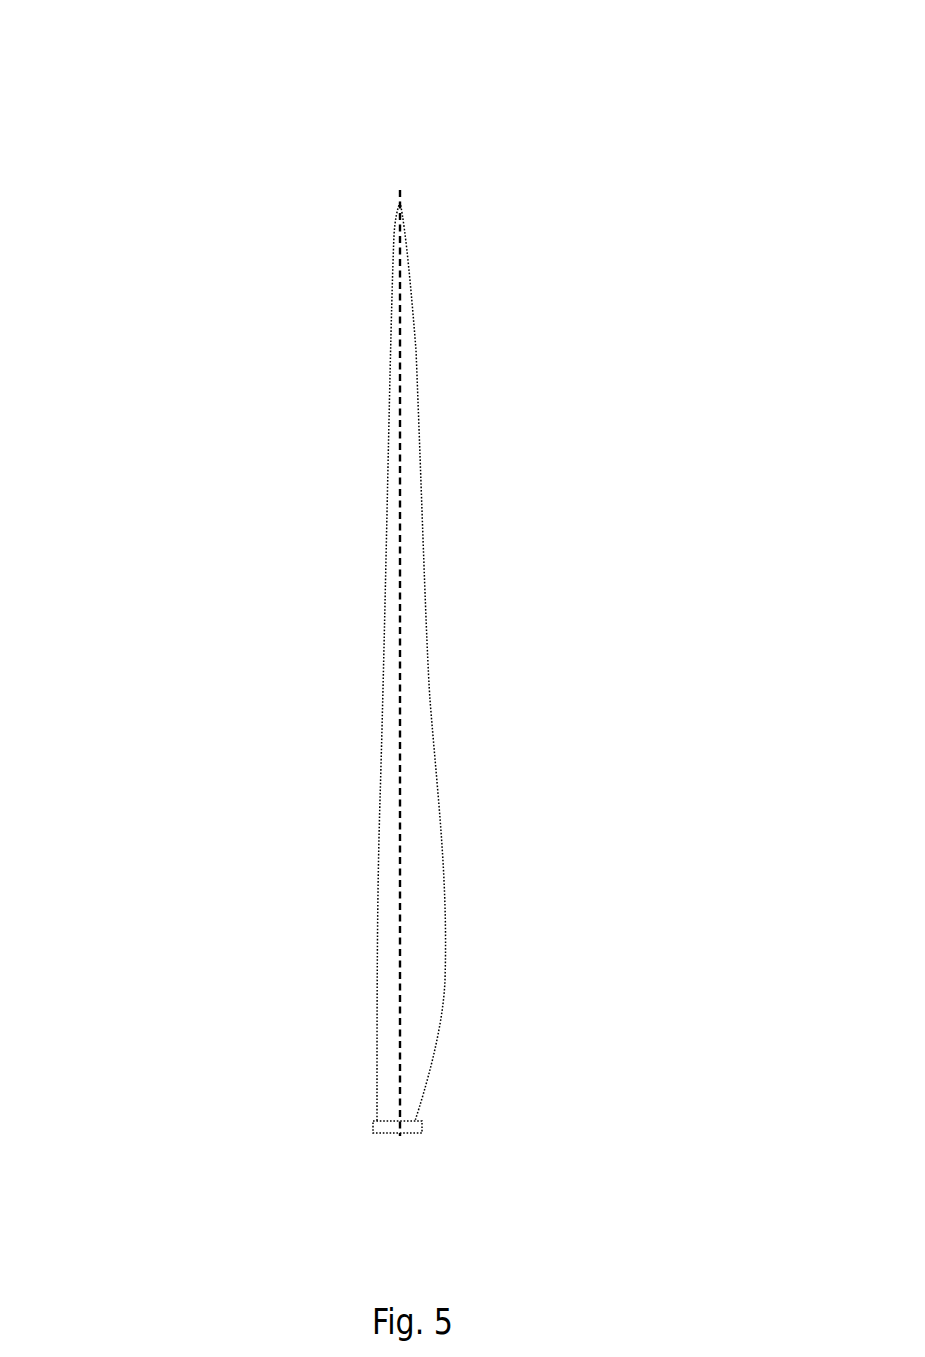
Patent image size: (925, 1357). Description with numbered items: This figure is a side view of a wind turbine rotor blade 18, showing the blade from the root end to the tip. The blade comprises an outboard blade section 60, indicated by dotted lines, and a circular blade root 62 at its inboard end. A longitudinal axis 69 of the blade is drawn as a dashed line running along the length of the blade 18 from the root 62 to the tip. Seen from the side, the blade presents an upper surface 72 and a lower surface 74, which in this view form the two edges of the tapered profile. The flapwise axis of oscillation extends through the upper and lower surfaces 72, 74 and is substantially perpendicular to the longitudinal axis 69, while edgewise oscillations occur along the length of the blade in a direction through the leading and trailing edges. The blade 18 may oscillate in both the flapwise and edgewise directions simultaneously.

The rotor blade 18 is at (143, 108).
The outboard blade section 60 is at (458, 247).
The circular blade root 62 is at (450, 1112).
The longitudinal axis 69 is at (405, 814).
The upper surface 72 is at (366, 331).
The lower surface 74 is at (436, 510).